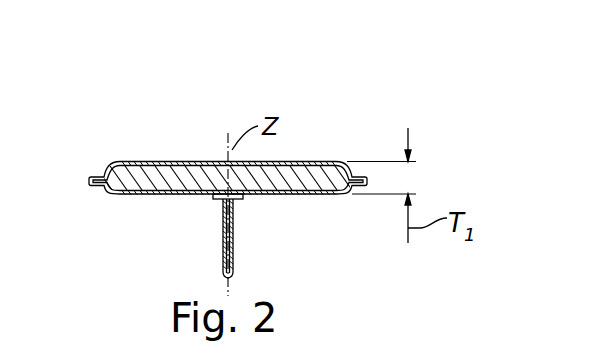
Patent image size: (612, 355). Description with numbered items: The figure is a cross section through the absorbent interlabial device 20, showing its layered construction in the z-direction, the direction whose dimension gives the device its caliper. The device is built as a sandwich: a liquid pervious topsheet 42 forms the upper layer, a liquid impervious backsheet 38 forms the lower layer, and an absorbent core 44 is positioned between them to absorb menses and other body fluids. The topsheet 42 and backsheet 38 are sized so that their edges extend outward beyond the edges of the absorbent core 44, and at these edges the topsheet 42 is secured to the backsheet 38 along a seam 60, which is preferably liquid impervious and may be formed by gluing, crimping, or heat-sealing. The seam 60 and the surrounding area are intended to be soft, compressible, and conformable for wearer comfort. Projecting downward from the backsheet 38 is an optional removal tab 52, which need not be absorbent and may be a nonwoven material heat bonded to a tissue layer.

The absorbent interlabial device 20 is at (133, 126).
The seam 60 is at (97, 177).
The liquid pervious topsheet 42 is at (285, 163).
The liquid impervious backsheet 38 is at (293, 193).
The absorbent core 44 is at (155, 182).
The removal tab 52 is at (233, 252).